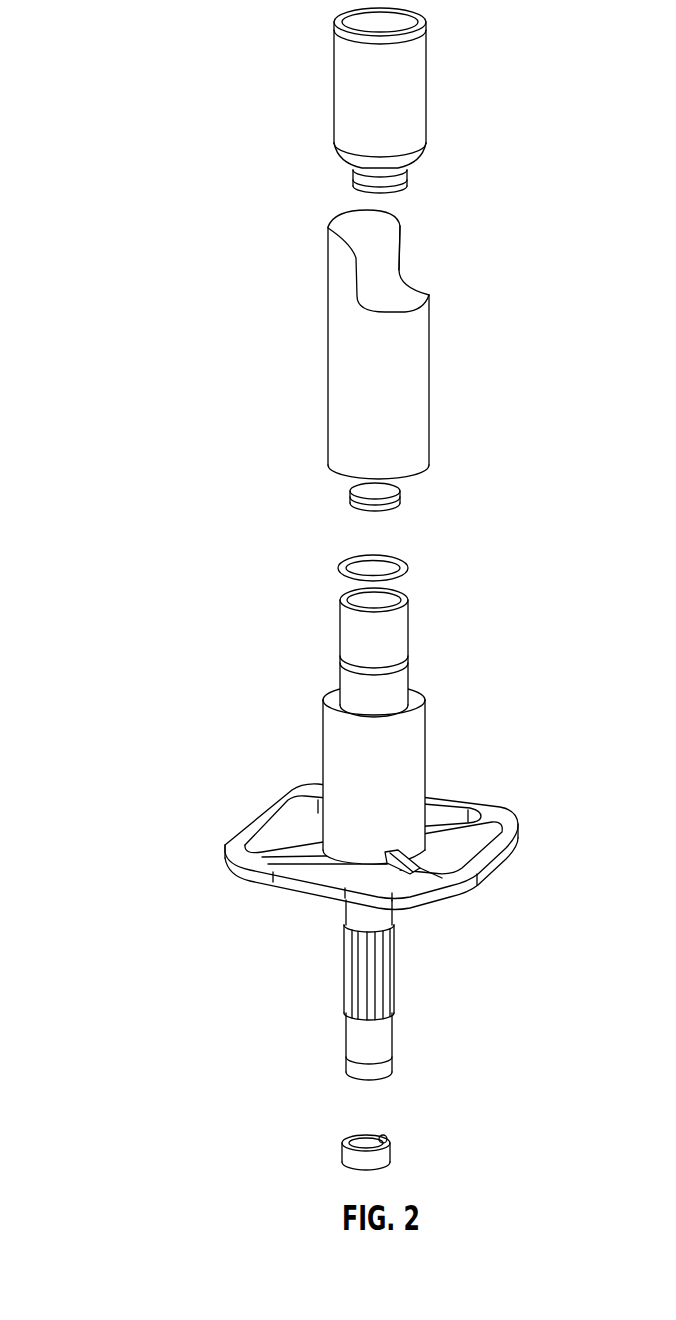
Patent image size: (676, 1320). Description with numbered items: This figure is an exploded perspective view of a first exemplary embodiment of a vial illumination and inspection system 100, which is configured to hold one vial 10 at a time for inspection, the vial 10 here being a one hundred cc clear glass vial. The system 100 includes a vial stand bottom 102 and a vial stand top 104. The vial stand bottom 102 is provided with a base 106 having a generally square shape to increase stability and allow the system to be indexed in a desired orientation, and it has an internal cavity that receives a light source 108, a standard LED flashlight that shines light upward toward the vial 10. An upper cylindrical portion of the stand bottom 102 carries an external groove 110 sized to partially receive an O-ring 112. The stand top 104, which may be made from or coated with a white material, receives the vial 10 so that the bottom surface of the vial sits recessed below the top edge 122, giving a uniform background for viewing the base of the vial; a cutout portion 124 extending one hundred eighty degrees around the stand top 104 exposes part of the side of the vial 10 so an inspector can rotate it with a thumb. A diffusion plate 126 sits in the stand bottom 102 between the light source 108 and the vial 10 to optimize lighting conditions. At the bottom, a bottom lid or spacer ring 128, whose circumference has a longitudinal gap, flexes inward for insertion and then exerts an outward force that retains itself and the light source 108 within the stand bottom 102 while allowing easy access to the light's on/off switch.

The vial illumination and inspection system 100 is at (111, 39).
The vial 10 is at (433, 93).
The vial stand top 104 is at (432, 380).
The top edge 122 is at (330, 228).
The cutout portion 124 is at (402, 256).
The diffusion plate 126 is at (404, 492).
The O-ring 112 is at (409, 568).
The external groove 110 is at (340, 658).
The vial stand bottom 102 is at (429, 700).
The base 106 is at (511, 818).
The light source 108 is at (397, 972).
The bottom lid or spacer ring 128 is at (392, 1136).